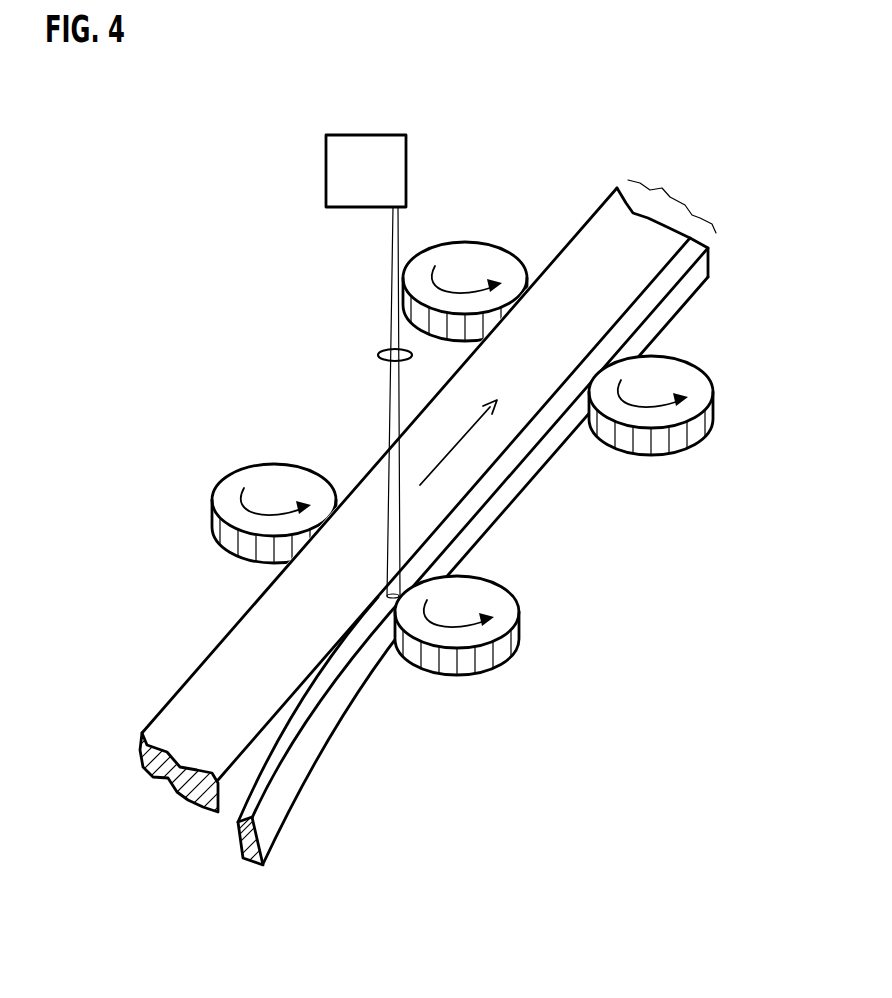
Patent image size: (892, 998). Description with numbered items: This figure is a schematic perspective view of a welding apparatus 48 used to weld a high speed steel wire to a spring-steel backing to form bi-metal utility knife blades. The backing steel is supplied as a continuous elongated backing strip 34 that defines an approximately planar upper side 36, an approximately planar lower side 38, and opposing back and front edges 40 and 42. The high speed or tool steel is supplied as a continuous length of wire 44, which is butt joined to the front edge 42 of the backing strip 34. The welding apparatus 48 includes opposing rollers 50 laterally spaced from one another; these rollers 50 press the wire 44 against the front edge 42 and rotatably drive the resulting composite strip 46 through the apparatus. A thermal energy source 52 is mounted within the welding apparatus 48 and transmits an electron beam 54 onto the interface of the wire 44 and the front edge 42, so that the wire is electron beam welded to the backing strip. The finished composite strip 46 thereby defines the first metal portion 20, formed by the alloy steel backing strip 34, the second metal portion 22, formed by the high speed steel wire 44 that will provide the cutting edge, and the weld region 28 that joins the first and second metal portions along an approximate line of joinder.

The first metal portion 20 is at (425, 502).
The second metal portion 22 is at (693, 204).
The weld region 28 is at (667, 277).
The backing strip 34 is at (198, 632).
The upper side 36 is at (177, 730).
The lower side 38 is at (153, 777).
The back edge 40 is at (142, 752).
The front edge 42 is at (237, 795).
The high speed steel wire 44 is at (310, 777).
The composite strip 46 is at (548, 235).
The welding apparatus 48 is at (456, 95).
The rollers 50 is at (464, 240).
The thermal energy source 52 is at (364, 135).
The electron beam 54 is at (380, 357).